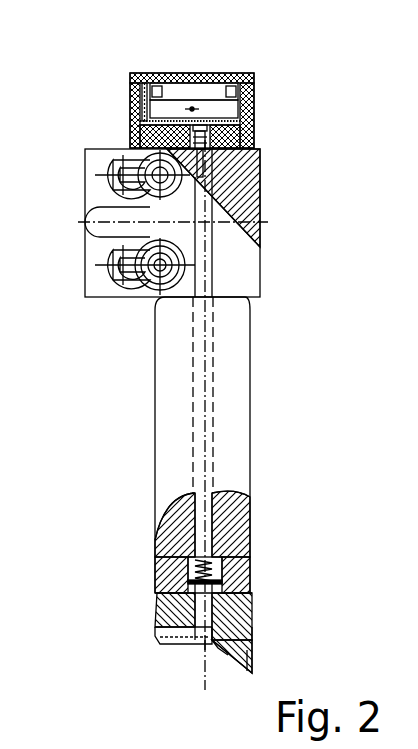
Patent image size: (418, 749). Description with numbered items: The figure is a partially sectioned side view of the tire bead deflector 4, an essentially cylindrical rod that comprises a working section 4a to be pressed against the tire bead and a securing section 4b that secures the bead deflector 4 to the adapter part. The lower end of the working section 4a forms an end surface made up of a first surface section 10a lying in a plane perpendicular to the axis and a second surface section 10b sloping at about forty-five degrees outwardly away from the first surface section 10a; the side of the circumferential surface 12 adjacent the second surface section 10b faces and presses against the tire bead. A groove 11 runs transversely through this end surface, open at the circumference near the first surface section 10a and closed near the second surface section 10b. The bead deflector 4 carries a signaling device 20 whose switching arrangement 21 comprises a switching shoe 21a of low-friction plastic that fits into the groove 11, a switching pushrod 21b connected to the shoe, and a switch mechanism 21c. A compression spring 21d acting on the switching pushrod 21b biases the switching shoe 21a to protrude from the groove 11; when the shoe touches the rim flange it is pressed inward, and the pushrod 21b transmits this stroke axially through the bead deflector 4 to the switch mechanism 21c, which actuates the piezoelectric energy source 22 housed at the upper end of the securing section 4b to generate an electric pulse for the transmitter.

The signaling device 20 is at (262, 107).
The switching arrangement 21 is at (217, 100).
The switching shoe 21a is at (185, 636).
The switching pushrod 21b is at (207, 515).
The switch mechanism 21c is at (133, 118).
The compression spring 21d is at (190, 565).
The energy source 22 is at (183, 92).
The tire bead deflector 4 is at (258, 378).
The working section 4a is at (235, 617).
The securing section 4b is at (245, 272).
The first surface section 10a is at (167, 643).
The second surface section 10b is at (227, 650).
The groove 11 is at (147, 632).
The circumferential surface 12 is at (258, 660).